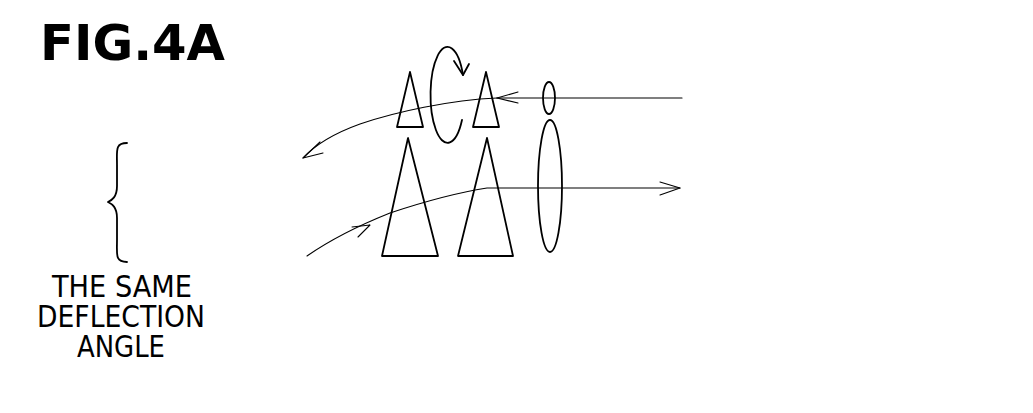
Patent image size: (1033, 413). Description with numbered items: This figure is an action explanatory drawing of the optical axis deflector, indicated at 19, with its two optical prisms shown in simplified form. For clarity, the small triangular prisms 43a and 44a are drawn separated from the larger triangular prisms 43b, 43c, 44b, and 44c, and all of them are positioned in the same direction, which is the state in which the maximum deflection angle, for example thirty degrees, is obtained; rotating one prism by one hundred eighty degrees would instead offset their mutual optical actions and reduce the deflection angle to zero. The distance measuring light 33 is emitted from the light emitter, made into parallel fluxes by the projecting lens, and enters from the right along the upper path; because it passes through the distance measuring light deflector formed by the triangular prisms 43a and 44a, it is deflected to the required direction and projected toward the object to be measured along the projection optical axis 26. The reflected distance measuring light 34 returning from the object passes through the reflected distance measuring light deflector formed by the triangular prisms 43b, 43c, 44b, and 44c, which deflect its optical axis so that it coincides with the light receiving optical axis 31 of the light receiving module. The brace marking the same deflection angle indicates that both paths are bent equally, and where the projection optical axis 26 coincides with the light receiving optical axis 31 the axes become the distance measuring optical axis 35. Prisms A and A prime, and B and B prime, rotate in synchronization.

The deflection unit 19 is at (547, 297).
The projection optical axis 26 is at (355, 130).
The light receiving optical axis 31 is at (327, 247).
The distance measuring light 33 is at (615, 98).
The reflected distance measuring light 34 is at (615, 188).
The distance measuring optical axis 35 is at (100, 202).
The triangular prism 43a is at (488, 83).
The triangular prism 43b is at (594, 227).
The triangular prism 43c is at (512, 240).
The triangular prism 44a is at (404, 93).
The triangular prism 44b is at (329, 224).
The triangular prism 44c is at (384, 237).